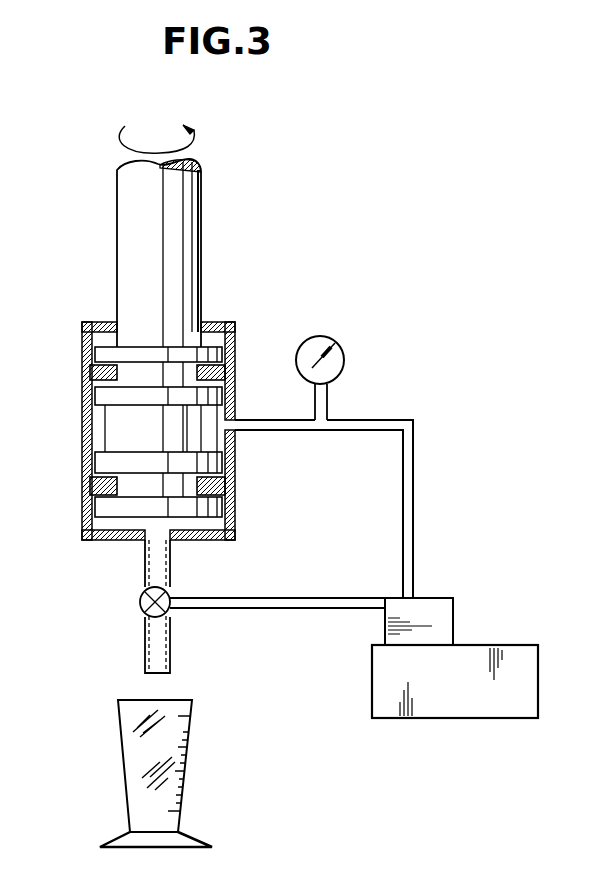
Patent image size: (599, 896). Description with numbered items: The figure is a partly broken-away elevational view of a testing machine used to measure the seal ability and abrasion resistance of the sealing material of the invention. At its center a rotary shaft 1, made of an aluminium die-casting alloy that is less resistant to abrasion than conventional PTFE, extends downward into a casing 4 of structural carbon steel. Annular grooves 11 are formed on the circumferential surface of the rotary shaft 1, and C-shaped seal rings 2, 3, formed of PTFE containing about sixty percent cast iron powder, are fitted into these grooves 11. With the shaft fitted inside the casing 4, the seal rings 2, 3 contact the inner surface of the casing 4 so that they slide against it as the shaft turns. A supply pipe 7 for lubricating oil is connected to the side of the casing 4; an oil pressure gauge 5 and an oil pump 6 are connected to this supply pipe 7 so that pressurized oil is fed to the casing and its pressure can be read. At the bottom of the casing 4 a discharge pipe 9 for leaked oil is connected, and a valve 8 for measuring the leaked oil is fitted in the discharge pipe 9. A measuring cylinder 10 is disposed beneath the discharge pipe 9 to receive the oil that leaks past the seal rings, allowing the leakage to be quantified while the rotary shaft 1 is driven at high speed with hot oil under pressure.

The rotary shaft 1 is at (187, 232).
The seal ring 2 is at (87, 372).
The seal ring 3 is at (90, 492).
The casing 4 is at (80, 530).
The oil pressure gauge 5 is at (337, 343).
The oil pump 6 is at (454, 605).
The supply pipe 7 is at (414, 468).
The valve 8 is at (138, 598).
The discharge pipe 9 is at (171, 640).
The measuring cylinder 10 is at (181, 752).
The annular groove 11 is at (236, 370).